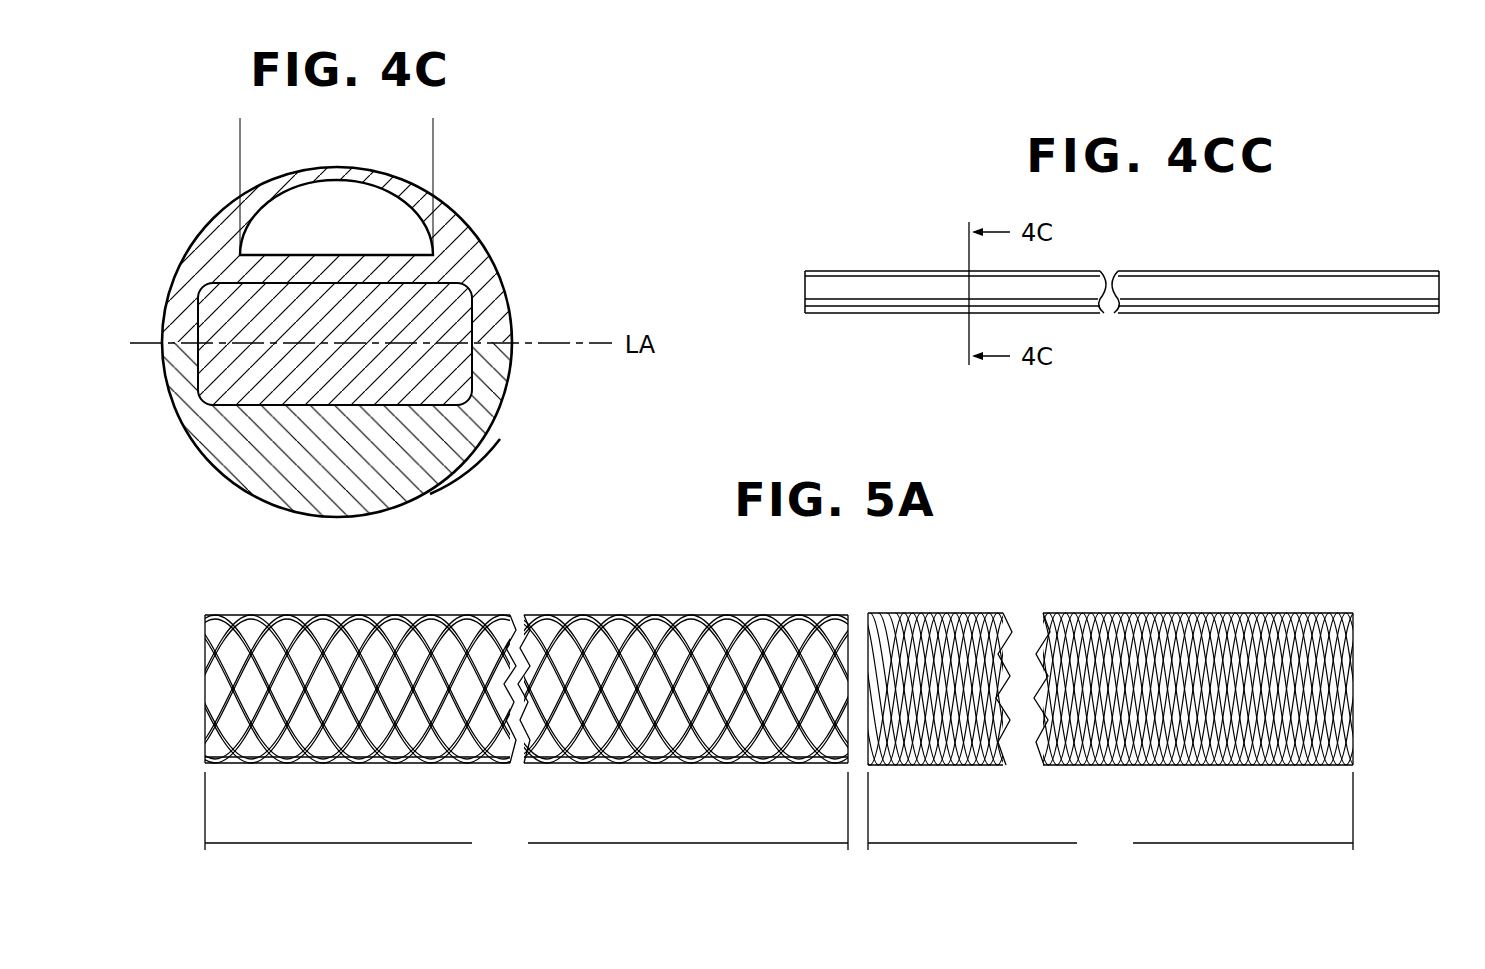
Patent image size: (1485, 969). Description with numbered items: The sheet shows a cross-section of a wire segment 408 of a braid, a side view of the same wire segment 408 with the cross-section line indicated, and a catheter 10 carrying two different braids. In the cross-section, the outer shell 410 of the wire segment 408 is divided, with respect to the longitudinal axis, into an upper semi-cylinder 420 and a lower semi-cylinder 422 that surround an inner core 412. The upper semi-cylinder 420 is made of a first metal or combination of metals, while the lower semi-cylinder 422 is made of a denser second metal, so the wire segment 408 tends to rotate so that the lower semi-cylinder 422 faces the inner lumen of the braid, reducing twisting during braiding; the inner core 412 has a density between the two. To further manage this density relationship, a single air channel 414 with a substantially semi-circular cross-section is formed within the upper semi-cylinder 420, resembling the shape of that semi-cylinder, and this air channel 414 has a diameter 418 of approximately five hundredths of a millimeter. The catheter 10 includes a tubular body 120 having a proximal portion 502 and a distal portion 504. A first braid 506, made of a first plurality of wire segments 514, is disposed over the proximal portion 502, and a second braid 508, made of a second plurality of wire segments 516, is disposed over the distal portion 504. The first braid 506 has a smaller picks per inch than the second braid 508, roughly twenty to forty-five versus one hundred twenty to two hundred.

In FIG. 4C, the wire segment 408 is at (473, 218).
In FIG. 4CC, the wire segment 408 is at (1274, 270).
In FIG. 4C, the outer shell 410 is at (240, 457).
In FIG. 4C, the inner core 412 is at (340, 383).
In FIG. 4C, the air channel 414 is at (242, 240).
In FIG. 4C, the diameter 418 is at (240, 133).
In FIG. 4C, the upper semi-cylinder 420 is at (493, 312).
In FIG. 4C, the lower semi-cylinder 422 is at (448, 438).
In FIG. 5A, the catheter 10 is at (1279, 592).
In FIG. 5A, the tubular body 120 is at (477, 607).
In FIG. 5A, the proximal portion 502 is at (526, 815).
In FIG. 5A, the distal portion 504 is at (1110, 815).
In FIG. 5A, the first braid 506 is at (592, 598).
In FIG. 5A, the second braid 508 is at (1126, 605).
In FIG. 5A, the first plurality of wire segments 514 is at (447, 765).
In FIG. 5A, the second plurality of wire segments 516 is at (988, 608).